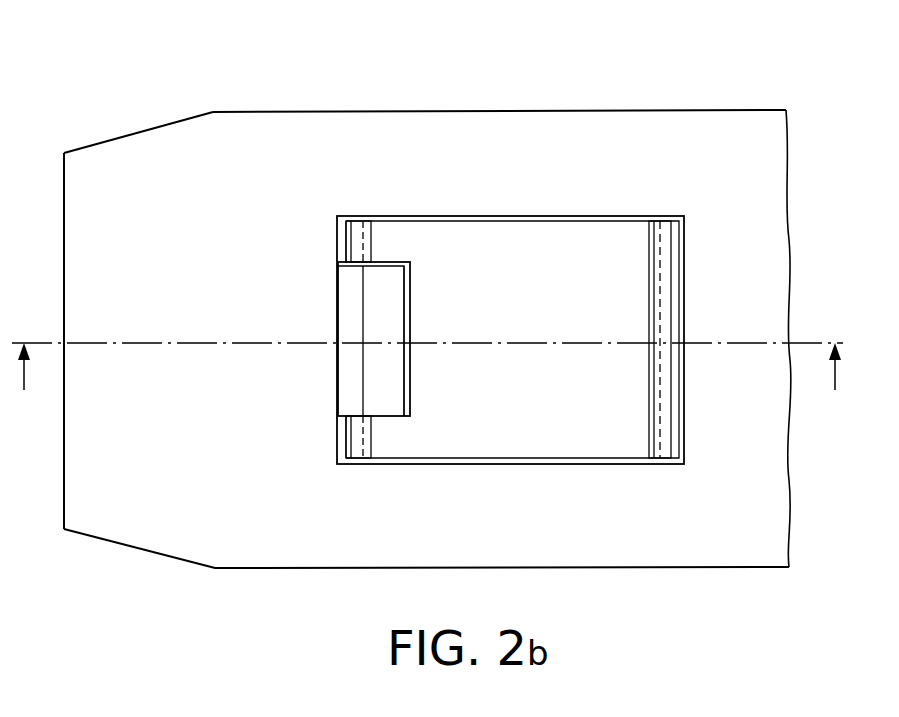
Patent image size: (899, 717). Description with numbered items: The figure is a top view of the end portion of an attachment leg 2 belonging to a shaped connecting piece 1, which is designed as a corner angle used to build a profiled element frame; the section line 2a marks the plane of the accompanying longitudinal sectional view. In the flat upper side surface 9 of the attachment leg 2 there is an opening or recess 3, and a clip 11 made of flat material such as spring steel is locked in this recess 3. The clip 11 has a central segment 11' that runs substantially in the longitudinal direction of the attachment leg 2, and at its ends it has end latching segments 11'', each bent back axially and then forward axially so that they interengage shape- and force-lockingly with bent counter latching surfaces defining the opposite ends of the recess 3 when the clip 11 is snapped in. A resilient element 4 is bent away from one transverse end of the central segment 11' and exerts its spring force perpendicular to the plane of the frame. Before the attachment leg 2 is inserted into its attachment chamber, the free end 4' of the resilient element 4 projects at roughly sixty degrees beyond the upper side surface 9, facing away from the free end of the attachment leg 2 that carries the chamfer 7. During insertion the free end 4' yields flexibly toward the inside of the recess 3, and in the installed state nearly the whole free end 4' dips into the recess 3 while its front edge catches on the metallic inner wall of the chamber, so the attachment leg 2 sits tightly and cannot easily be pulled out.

The shaped connecting piece 1 is at (763, 98).
The attachment leg 2 is at (200, 142).
The chamfer 7 is at (108, 140).
The section line of FIG. 2a is at (431, 382).
The opening or recess 3 is at (462, 222).
The upper side surface 9 is at (600, 166).
The clip 11 is at (637, 315).
The central segment 11' is at (554, 384).
The end latching segments 11'' is at (548, 340).
The resilient element 4 is at (351, 339).
The free end of the resilient element 4' is at (429, 341).